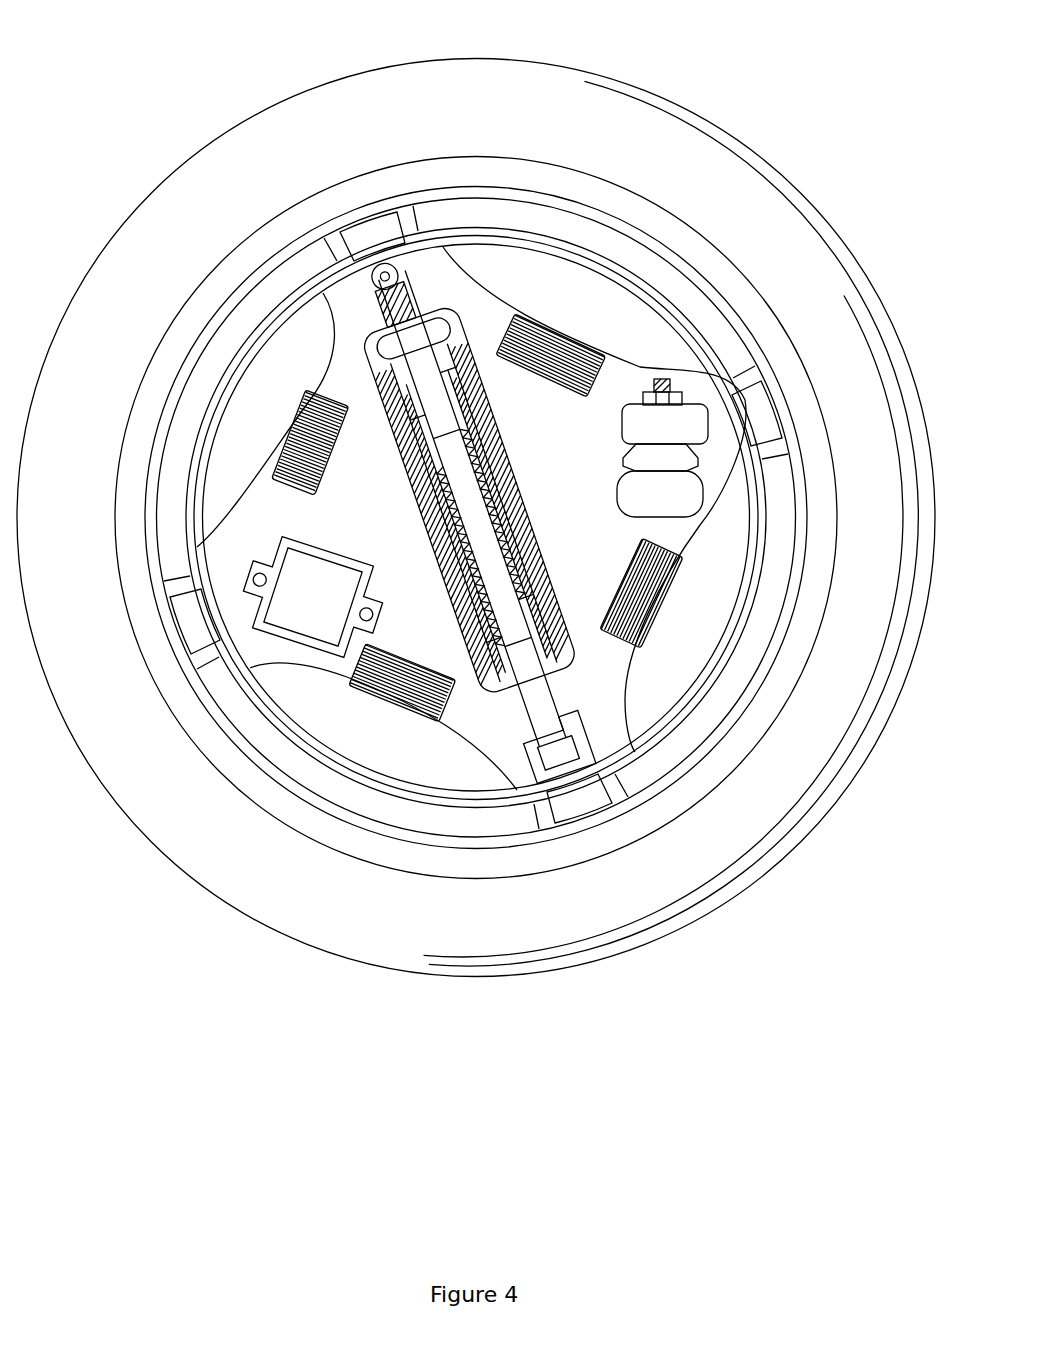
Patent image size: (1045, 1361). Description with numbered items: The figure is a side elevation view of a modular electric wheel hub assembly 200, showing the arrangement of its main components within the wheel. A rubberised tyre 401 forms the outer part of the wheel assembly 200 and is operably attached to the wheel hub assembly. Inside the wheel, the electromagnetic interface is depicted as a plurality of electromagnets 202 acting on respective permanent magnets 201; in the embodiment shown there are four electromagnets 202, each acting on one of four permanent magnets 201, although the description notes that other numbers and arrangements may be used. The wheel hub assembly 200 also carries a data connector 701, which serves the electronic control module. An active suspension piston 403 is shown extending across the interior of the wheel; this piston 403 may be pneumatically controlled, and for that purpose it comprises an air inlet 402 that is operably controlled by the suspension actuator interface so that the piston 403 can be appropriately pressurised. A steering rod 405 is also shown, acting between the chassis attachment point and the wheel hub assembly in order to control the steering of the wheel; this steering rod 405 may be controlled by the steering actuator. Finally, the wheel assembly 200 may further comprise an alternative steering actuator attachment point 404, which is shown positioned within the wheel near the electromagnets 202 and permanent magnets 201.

The wheel hub assembly 200 is at (747, 76).
The permanent magnets 201 is at (343, 773).
The electromagnets 202 is at (590, 312).
The rubberised tyre 401 is at (796, 197).
The air inlet 402 is at (391, 293).
The active suspension piston 403 is at (477, 518).
The alternative steering actuator attachment point 404 is at (626, 427).
The steering rod 405 is at (557, 746).
The data connector 701 is at (328, 608).